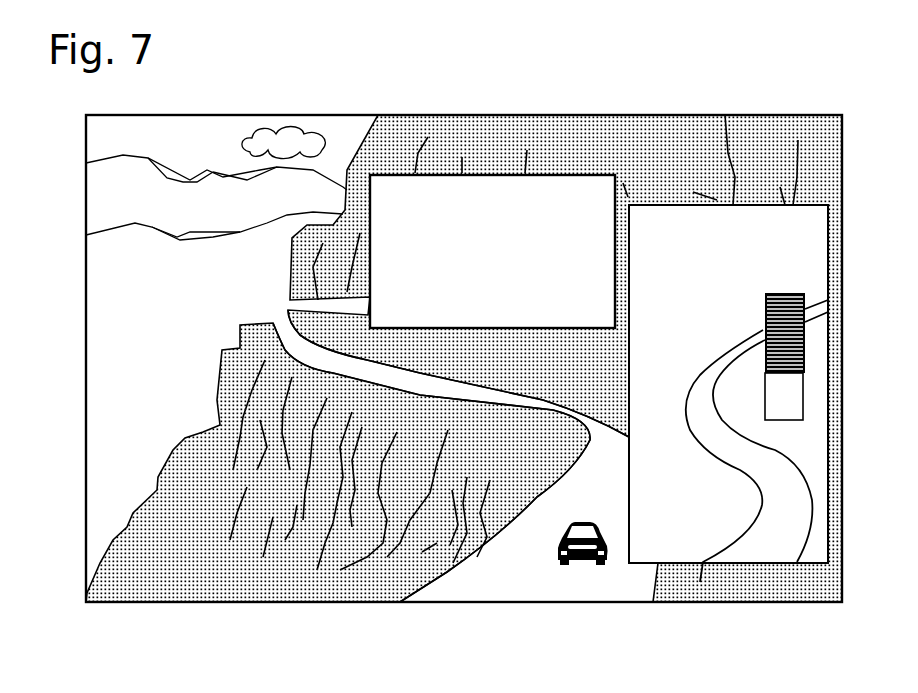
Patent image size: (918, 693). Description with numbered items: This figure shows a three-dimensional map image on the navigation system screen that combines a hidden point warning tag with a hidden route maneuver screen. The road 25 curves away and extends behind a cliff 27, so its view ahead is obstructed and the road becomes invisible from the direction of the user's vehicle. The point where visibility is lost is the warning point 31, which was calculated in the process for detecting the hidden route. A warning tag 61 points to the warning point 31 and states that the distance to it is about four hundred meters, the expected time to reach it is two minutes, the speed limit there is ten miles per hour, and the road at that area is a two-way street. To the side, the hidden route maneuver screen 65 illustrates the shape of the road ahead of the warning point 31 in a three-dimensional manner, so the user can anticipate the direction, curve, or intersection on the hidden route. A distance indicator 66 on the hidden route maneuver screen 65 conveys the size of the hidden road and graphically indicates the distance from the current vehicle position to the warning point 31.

The road 25 is at (570, 580).
The cliff 27 is at (493, 143).
The warning point 31 is at (283, 318).
The warning tag 61 is at (580, 182).
The hidden route maneuver screen 65 is at (818, 237).
The distance indicator 66 is at (783, 402).